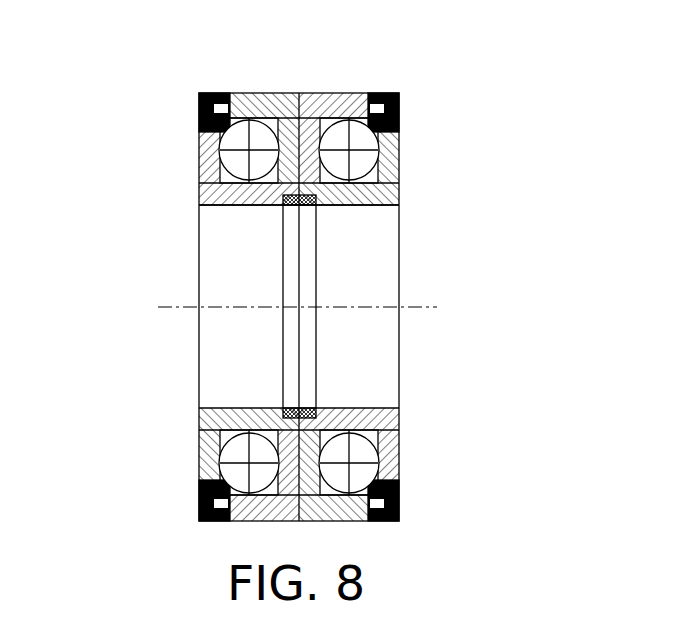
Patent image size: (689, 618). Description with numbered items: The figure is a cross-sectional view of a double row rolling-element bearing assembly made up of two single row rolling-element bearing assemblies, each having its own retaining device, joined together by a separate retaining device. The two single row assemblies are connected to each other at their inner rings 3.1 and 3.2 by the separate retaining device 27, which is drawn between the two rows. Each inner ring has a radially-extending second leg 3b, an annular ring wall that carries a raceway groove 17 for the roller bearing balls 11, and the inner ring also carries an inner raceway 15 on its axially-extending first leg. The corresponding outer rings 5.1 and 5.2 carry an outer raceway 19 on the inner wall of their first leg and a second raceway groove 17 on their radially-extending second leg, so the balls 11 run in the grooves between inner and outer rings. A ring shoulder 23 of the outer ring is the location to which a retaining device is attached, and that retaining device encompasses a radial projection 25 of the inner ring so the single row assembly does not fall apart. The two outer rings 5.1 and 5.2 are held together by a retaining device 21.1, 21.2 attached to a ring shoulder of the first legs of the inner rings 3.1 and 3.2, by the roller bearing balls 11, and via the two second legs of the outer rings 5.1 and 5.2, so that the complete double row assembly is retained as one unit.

The inner ring 3.1 is at (186, 213).
The inner ring 3.2 is at (412, 211).
The second leg 3b is at (198, 168).
The outer ring 5.1 is at (185, 79).
The outer ring 5.2 is at (414, 80).
The roller bearing balls 11 is at (379, 158).
The inner raceway 15 is at (198, 158).
The raceway groove 17 is at (198, 122).
The outer raceway 19 is at (198, 470).
The retaining device 21.1 is at (198, 520).
The retaining device 21.2 is at (398, 521).
The ring shoulder 23 is at (198, 495).
The radial projection 25 is at (198, 430).
The separate retaining device 27 is at (307, 400).